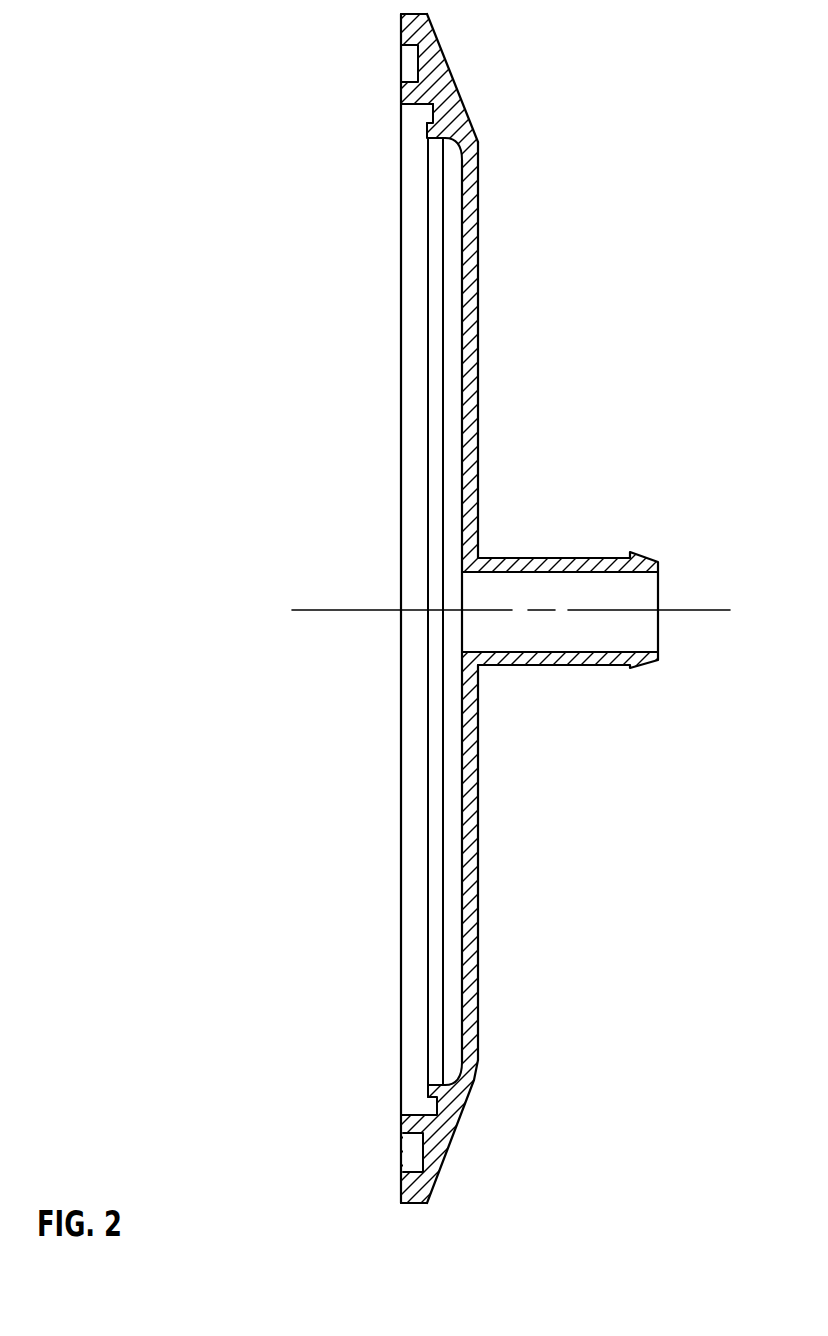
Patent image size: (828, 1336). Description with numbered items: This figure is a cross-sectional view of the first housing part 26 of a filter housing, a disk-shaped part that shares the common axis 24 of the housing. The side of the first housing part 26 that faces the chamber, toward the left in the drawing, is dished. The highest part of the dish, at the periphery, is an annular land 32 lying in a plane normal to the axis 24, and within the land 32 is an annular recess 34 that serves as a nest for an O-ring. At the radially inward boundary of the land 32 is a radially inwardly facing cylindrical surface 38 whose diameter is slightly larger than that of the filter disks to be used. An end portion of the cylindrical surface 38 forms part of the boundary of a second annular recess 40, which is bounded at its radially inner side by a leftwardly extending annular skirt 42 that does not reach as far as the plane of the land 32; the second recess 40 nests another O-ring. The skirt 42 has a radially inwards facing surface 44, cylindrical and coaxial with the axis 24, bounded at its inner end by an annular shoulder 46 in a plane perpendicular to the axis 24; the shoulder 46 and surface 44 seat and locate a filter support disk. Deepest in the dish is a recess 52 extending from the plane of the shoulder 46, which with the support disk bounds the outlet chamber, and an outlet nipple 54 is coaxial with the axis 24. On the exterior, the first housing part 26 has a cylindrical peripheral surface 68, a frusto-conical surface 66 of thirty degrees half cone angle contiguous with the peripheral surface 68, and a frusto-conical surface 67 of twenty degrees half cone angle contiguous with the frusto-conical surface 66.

The axis 24 is at (310, 608).
The first housing part 26 is at (279, 149).
The annular land 32 is at (401, 18).
The annular recess 34 is at (402, 60).
The cylindrical surface 38 is at (404, 112).
The second annular recess 40 is at (418, 128).
The annular skirt 42 is at (434, 1098).
The radially inwards facing surface 44 is at (440, 148).
The annular shoulder 46 is at (433, 1083).
The recess 52 is at (470, 290).
The outlet nipple 54 is at (538, 558).
The frusto-conical surface 66 is at (430, 14).
The frusto-conical surface 67 is at (466, 85).
The cylindrical peripheral surface 68 is at (408, 1205).